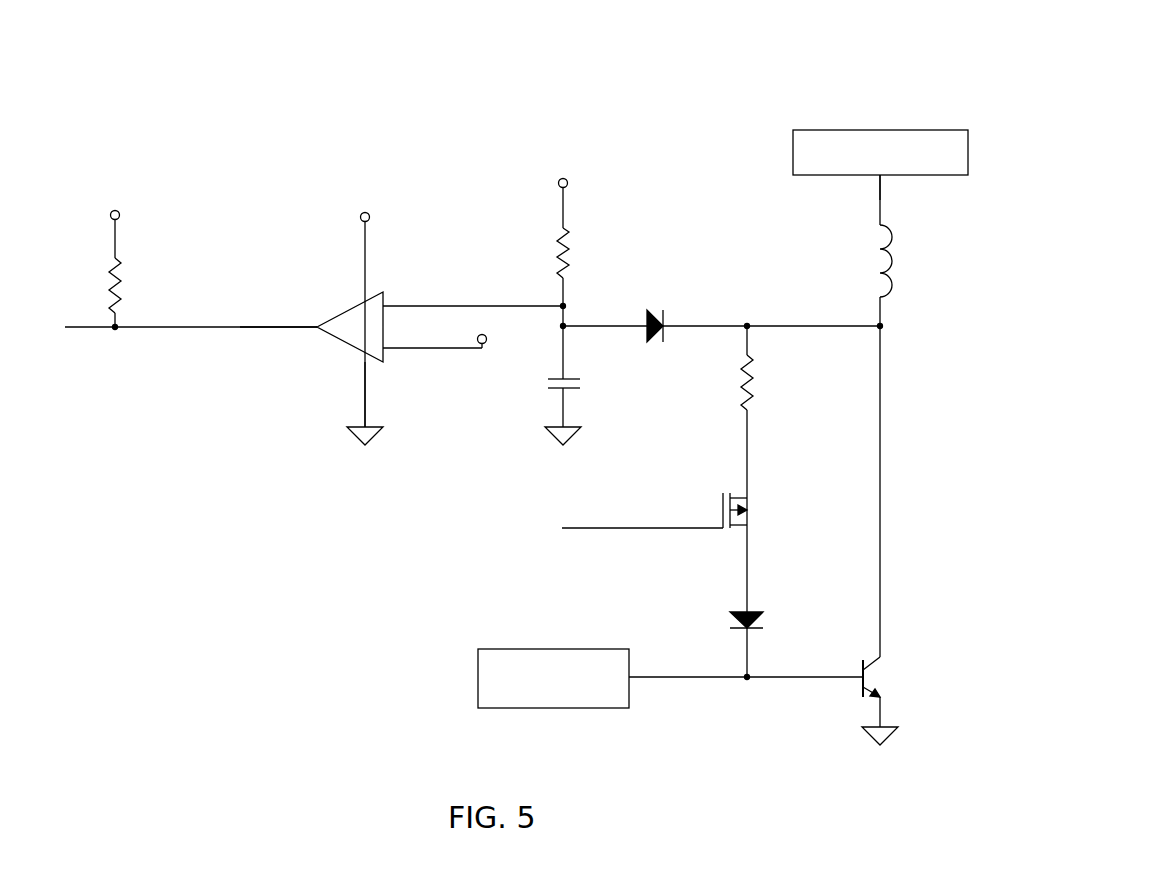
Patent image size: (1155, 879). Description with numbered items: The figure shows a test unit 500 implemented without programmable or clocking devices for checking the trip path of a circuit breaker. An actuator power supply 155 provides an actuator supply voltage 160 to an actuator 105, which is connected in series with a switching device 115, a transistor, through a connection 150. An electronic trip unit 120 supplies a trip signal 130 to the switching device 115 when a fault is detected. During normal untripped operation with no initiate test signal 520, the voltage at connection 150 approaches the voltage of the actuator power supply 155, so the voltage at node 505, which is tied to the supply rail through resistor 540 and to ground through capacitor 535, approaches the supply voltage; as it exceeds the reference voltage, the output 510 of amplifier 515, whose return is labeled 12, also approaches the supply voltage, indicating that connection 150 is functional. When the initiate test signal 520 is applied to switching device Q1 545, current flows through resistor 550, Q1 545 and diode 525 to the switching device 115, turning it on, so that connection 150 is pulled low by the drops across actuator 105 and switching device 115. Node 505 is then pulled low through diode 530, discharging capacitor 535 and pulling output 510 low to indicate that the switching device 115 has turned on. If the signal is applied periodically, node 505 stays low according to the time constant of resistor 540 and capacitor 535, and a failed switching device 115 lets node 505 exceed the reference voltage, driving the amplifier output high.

The test unit 500 is at (391, 97).
The output 510 is at (275, 325).
The amplifier 515 is at (352, 300).
The amplifier ground 12 is at (351, 394).
The node 505 is at (430, 306).
The resistor 540 is at (613, 245).
The capacitor 535 is at (597, 385).
The diode 530 is at (721, 335).
The resistor 550 is at (798, 409).
The switching device Q1 545 is at (777, 552).
The initiate test signal 520 is at (612, 527).
The diode 525 is at (789, 644).
The electronic trip unit 120 is at (555, 648).
The trip signal 130 is at (670, 677).
The switching device 115 is at (880, 693).
The connection 150 is at (882, 330).
The actuator 105 is at (888, 262).
The actuator supply voltage 160 is at (883, 178).
The actuator power supply 155 is at (968, 152).